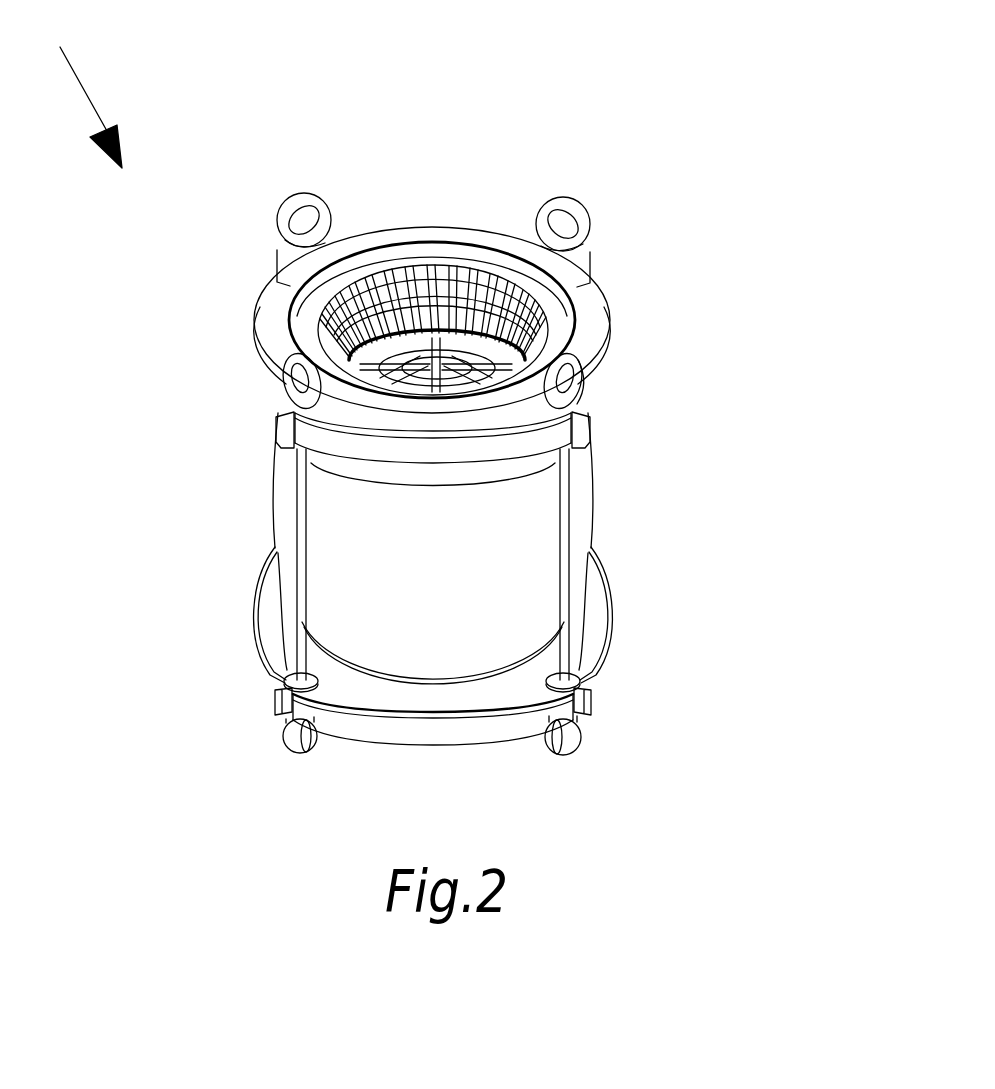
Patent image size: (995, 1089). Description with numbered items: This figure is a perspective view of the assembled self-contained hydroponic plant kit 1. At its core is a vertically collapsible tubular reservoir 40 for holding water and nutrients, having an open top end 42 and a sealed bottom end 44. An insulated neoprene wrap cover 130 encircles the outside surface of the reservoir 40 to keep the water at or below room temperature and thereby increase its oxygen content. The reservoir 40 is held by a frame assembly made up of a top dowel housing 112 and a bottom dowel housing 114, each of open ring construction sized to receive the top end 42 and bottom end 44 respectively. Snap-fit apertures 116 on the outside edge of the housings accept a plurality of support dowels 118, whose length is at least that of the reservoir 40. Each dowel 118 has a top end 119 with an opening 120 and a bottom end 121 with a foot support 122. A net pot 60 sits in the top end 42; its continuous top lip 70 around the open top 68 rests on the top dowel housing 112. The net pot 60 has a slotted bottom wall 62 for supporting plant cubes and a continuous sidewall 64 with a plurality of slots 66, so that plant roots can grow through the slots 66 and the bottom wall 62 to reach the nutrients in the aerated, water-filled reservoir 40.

The self-contained hydroponic plant kit 1 is at (82, 89).
The vertically collapsible tubular reservoir 40 is at (290, 490).
The open top end 42 is at (557, 283).
The sealed bottom end 44 is at (420, 683).
The net pot 60 is at (355, 263).
The slotted bottom wall 62 is at (342, 297).
The continuous sidewall 64 is at (423, 267).
The slots 66 is at (390, 280).
The open top 68 is at (482, 295).
The top lip 70 is at (307, 302).
The top dowel housing 112 is at (435, 232).
The bottom dowel housing 114 is at (597, 620).
The snap-fit apertures 116 is at (583, 427).
The support dowels 118 is at (562, 522).
The top end 119 is at (573, 353).
The opening 120 is at (565, 380).
The bottom end 121 is at (568, 740).
The foot support 122 is at (577, 750).
The insulated neoprene wrap cover 130 is at (290, 554).